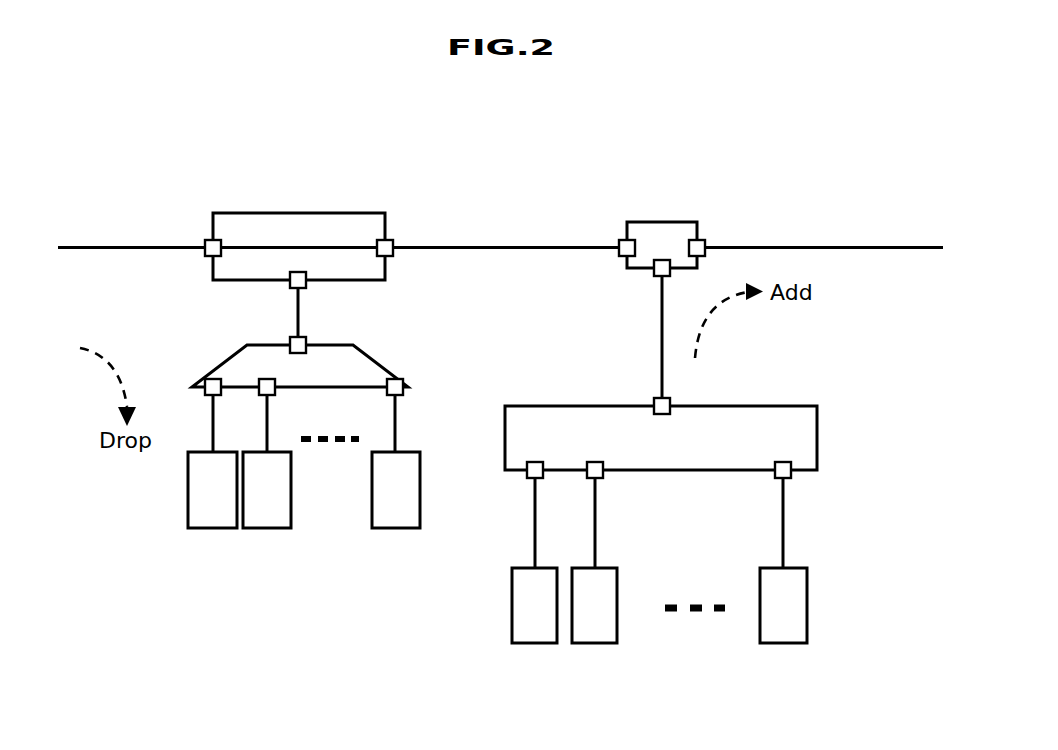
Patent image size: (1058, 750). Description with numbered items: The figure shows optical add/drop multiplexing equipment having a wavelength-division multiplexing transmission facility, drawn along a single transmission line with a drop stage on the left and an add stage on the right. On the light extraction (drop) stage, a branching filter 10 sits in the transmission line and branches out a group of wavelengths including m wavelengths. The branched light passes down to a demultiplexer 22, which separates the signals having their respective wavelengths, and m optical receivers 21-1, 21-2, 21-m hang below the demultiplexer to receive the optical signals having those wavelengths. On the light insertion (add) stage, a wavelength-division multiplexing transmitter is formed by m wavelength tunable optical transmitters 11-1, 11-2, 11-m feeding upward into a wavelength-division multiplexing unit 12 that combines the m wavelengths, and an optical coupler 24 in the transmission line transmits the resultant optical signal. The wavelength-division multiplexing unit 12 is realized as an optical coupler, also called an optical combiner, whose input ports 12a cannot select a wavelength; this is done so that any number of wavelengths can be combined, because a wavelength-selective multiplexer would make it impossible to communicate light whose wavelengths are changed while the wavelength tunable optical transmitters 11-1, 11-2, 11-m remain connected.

The branching filter 10 is at (215, 274).
The demultiplexer 22 is at (373, 358).
The optical receiver 21-1 is at (203, 528).
The optical receiver 21-2 is at (273, 528).
The optical receiver 21-m is at (402, 528).
The optical coupler 24 is at (697, 222).
The wavelength-division multiplexing unit 12 is at (760, 406).
The input port 12a is at (603, 478).
The wavelength tunable optical transmitter 11-1 is at (537, 643).
The wavelength tunable optical transmitter 11-2 is at (610, 643).
The wavelength tunable optical transmitter 11-m is at (780, 643).